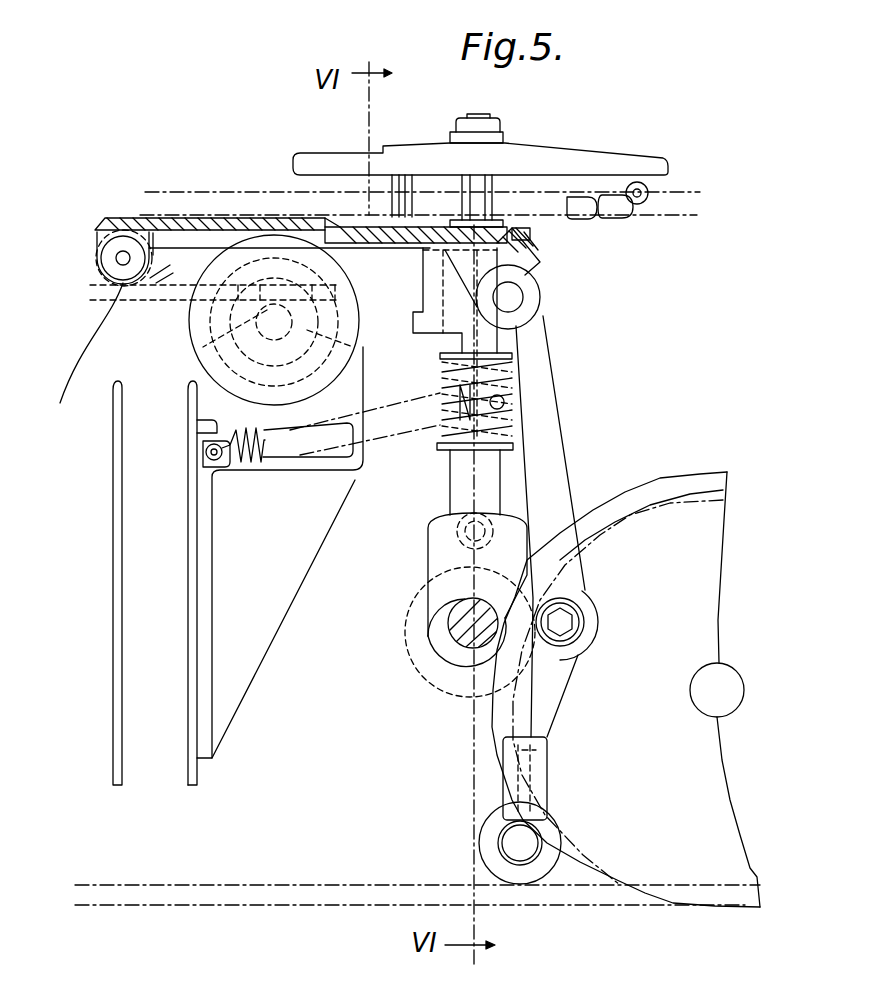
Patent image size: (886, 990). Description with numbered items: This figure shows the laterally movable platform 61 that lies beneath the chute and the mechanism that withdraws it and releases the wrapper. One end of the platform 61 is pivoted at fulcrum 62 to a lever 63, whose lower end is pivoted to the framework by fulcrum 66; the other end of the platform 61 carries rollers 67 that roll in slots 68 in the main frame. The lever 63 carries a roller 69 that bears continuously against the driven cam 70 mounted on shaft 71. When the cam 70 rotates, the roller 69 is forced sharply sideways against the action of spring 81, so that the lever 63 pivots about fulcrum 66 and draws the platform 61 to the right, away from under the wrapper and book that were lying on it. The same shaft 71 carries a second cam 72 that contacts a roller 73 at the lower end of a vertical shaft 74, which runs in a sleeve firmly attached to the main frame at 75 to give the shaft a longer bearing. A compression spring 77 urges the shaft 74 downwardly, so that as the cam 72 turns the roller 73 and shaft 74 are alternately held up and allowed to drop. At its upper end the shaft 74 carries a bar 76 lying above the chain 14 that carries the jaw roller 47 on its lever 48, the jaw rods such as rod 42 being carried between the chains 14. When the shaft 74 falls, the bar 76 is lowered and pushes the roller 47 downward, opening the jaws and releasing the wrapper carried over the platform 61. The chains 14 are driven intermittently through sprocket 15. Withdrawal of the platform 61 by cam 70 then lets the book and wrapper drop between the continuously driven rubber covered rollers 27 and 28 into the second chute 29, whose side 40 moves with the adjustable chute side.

The chains 14 is at (700, 195).
The sprocket 15 is at (615, 878).
The rubber covered roller 27 is at (100, 393).
The rubber covered roller 28 is at (213, 340).
The second chute 29 is at (138, 598).
The side of chute 40 is at (203, 575).
The rod 42 is at (578, 220).
The roller 47 is at (648, 193).
The lever 48 is at (633, 203).
The platform 61 is at (125, 217).
The fulcrum 62 is at (522, 300).
The lever 63 is at (530, 467).
The fulcrum 66 is at (503, 843).
The rollers 67 is at (96, 256).
The slots 68 is at (157, 294).
The roller 69 is at (590, 625).
The cam 70 is at (433, 643).
The shaft 71 is at (457, 610).
The second cam 72 is at (437, 673).
The roller 73 is at (440, 530).
The shaft 74 is at (457, 466).
The attachment to main frame 75 is at (450, 291).
The bar 76 is at (551, 150).
The compression spring 77 is at (447, 368).
The spring 81 is at (290, 458).